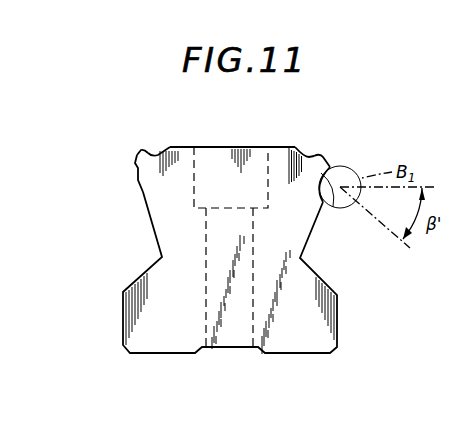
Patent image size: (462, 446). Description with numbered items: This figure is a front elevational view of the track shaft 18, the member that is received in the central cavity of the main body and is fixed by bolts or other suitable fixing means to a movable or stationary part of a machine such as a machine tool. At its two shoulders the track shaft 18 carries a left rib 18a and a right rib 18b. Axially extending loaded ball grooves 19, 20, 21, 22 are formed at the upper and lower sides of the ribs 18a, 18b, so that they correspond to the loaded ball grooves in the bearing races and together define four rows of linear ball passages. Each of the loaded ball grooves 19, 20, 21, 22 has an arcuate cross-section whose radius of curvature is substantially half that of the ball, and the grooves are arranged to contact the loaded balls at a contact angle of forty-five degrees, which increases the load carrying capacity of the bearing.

The track shaft 18 is at (243, 148).
The left rib 18a is at (140, 153).
The right rib 18b is at (329, 157).
The loaded ball groove 19 is at (158, 153).
The loaded ball groove 20 is at (138, 175).
The loaded ball groove 21 is at (310, 153).
The loaded ball groove 22 is at (340, 202).